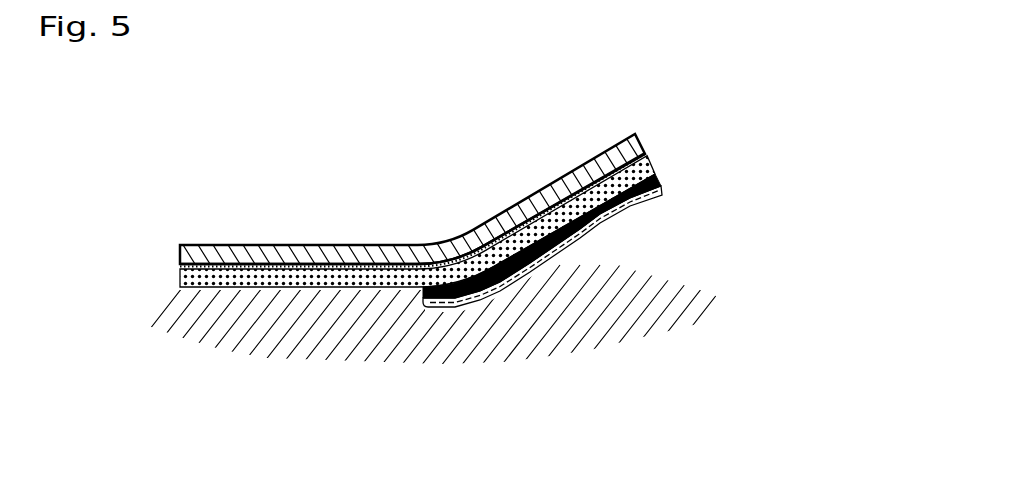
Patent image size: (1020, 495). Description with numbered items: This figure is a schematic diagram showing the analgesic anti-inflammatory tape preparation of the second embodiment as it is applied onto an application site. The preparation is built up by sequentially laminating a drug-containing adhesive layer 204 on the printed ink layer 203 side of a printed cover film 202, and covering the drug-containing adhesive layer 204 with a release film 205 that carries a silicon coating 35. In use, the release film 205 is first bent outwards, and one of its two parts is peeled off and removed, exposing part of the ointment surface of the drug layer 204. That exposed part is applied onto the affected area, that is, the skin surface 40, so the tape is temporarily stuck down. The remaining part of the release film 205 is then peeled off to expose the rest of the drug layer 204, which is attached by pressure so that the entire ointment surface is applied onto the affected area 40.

The cover film 202 is at (240, 262).
The printed ink layer 203 is at (648, 156).
The drug-containing adhesive layer 204 is at (210, 274).
The silicon coating 35 is at (657, 180).
The release film 205 is at (660, 197).
The affected area 40 is at (623, 315).